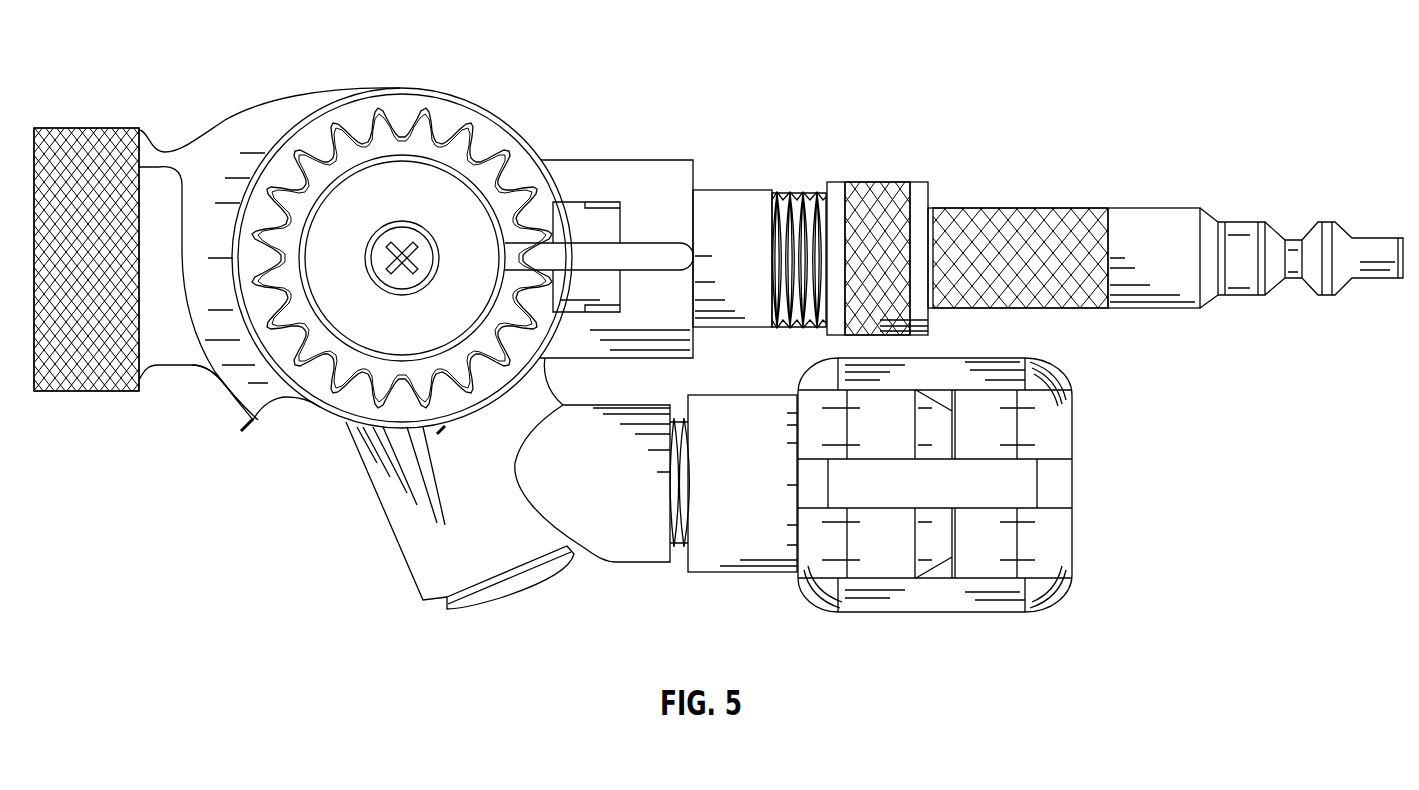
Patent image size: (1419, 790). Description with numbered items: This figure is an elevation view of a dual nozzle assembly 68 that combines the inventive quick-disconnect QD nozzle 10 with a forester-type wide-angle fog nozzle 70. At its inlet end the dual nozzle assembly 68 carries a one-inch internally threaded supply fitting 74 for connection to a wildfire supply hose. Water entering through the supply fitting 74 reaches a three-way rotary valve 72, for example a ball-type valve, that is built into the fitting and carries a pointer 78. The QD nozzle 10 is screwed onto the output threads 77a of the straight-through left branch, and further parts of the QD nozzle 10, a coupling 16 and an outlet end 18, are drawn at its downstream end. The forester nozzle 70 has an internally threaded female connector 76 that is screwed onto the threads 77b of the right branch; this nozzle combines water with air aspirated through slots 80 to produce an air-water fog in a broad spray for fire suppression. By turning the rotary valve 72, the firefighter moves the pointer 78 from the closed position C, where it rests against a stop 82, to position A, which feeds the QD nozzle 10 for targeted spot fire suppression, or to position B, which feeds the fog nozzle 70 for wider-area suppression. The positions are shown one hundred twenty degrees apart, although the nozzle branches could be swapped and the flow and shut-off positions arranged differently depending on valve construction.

The QD nozzle 10 is at (1095, 170).
The knurled coupling nut 16 is at (884, 190).
The quick-connect plug 18 is at (1330, 224).
The dual nozzle assembly 68 is at (215, 84).
The forester-type wide-angle fog nozzle 70 is at (992, 614).
The 3-way rotary valve 72 is at (432, 120).
The internally threaded supply fitting 74 is at (75, 143).
The internally threaded female connector 76 is at (760, 553).
The output threads 77a is at (790, 195).
The threads 77b is at (680, 565).
The pointer 78 is at (658, 258).
The slots 80 is at (940, 395).
The stop 82 is at (238, 390).
The position A is at (694, 255).
The position B is at (441, 432).
The position C is at (248, 426).